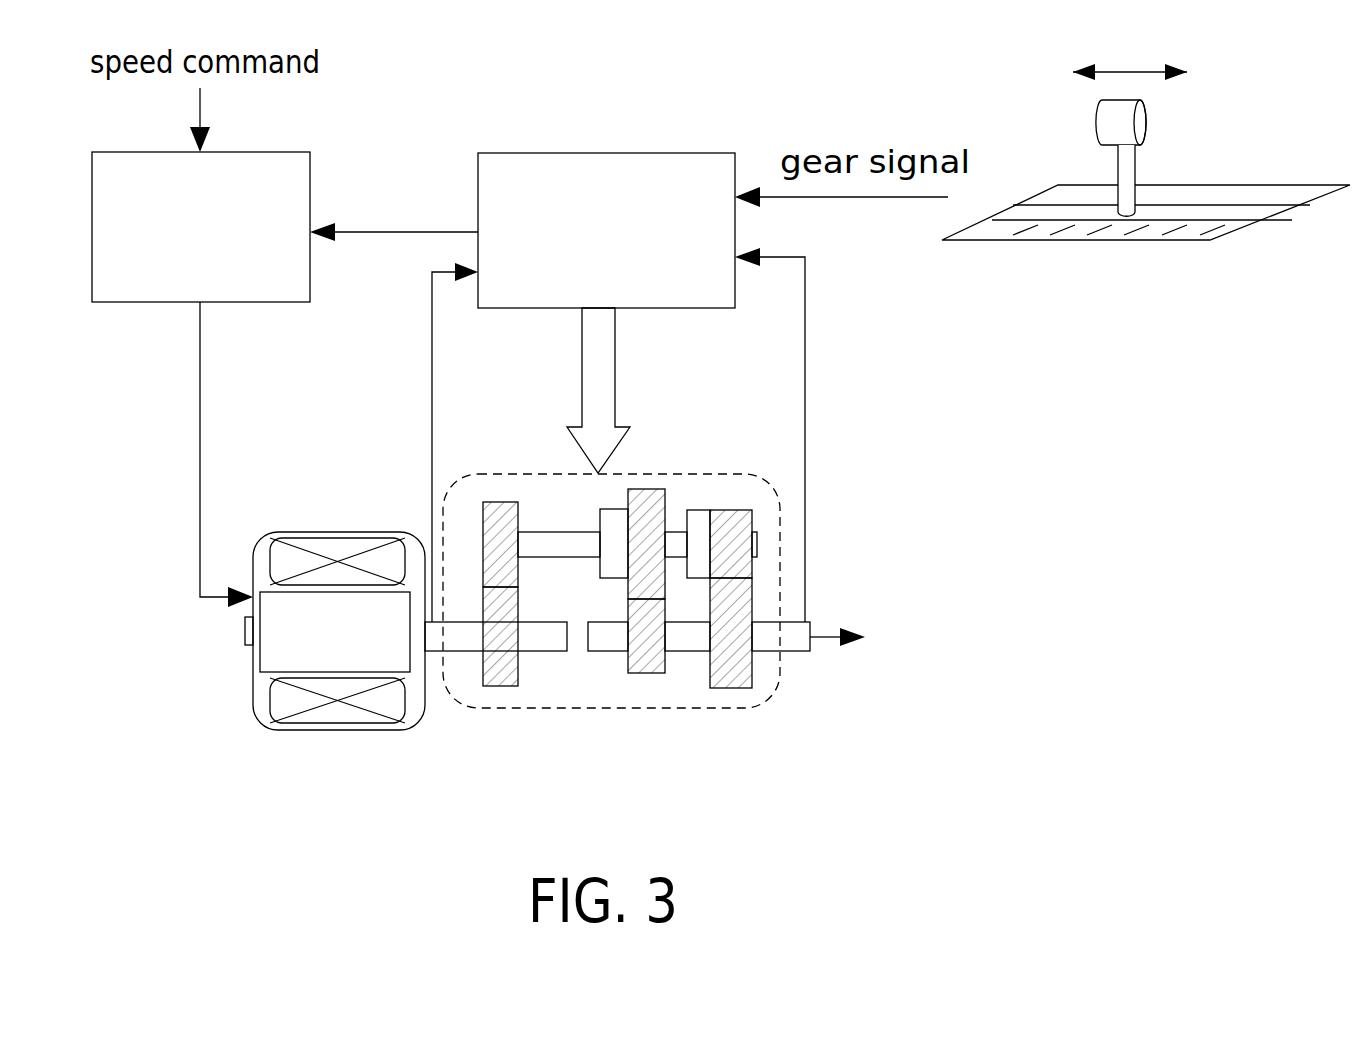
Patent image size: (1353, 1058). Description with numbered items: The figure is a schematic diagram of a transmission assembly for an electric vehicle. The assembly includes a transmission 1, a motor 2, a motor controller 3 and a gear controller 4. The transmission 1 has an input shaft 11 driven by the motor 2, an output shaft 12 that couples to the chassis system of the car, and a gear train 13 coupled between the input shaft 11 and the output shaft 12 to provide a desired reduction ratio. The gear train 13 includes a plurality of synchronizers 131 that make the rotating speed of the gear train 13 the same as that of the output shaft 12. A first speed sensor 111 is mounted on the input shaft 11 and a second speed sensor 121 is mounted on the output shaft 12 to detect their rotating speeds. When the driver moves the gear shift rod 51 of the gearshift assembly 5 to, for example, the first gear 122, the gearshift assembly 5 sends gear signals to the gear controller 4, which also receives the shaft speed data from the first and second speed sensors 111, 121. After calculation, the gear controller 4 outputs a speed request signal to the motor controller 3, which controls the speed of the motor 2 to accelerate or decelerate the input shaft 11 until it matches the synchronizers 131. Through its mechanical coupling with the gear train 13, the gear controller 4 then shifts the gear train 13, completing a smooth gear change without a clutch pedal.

The transmission 1 is at (548, 730).
The input shaft 11 is at (467, 648).
The first speed sensor 111 is at (437, 655).
The output shaft 12 is at (788, 647).
The second speed sensor 121 is at (807, 627).
The first gear 122 is at (645, 665).
The gear train 13 is at (555, 545).
The synchronizers 131 is at (613, 518).
The motor 2 is at (260, 693).
The motor controller 3 is at (106, 152).
The gear controller 4 is at (560, 160).
The gearshift assembly 5 is at (1145, 148).
The gear shift rod 51 is at (1128, 168).